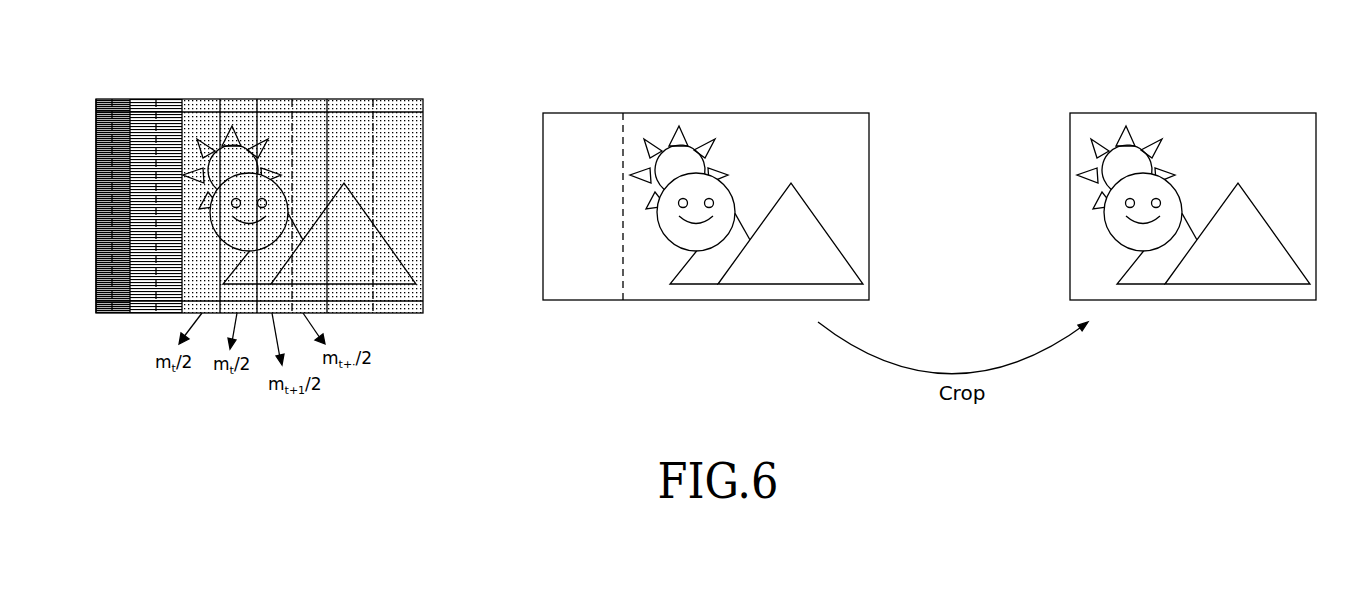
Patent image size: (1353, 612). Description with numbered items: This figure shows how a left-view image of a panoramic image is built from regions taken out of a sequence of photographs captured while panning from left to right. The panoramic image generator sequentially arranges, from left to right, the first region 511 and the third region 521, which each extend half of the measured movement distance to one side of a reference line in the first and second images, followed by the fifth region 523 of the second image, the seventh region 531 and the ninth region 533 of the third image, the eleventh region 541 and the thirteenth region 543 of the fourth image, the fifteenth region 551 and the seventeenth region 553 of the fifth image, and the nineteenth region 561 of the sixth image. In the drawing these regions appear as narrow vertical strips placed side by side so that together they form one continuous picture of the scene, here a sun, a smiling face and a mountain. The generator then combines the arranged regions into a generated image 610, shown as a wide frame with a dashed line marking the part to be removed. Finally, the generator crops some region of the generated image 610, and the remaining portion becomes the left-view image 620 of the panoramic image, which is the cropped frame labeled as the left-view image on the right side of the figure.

The first region 511 is at (100, 98).
The third region 521 is at (118, 98).
The fifth region 523 is at (142, 98).
The seventh region 531 is at (168, 98).
The ninth region 533 is at (200, 98).
The eleventh region 541 is at (238, 98).
The thirteenth region 543 is at (273, 98).
The fifteenth region 551 is at (307, 98).
The seventeenth region 553 is at (345, 98).
The nineteenth region 561 is at (395, 98).
The generated image 610 is at (748, 103).
The left-view image 620 is at (1195, 103).